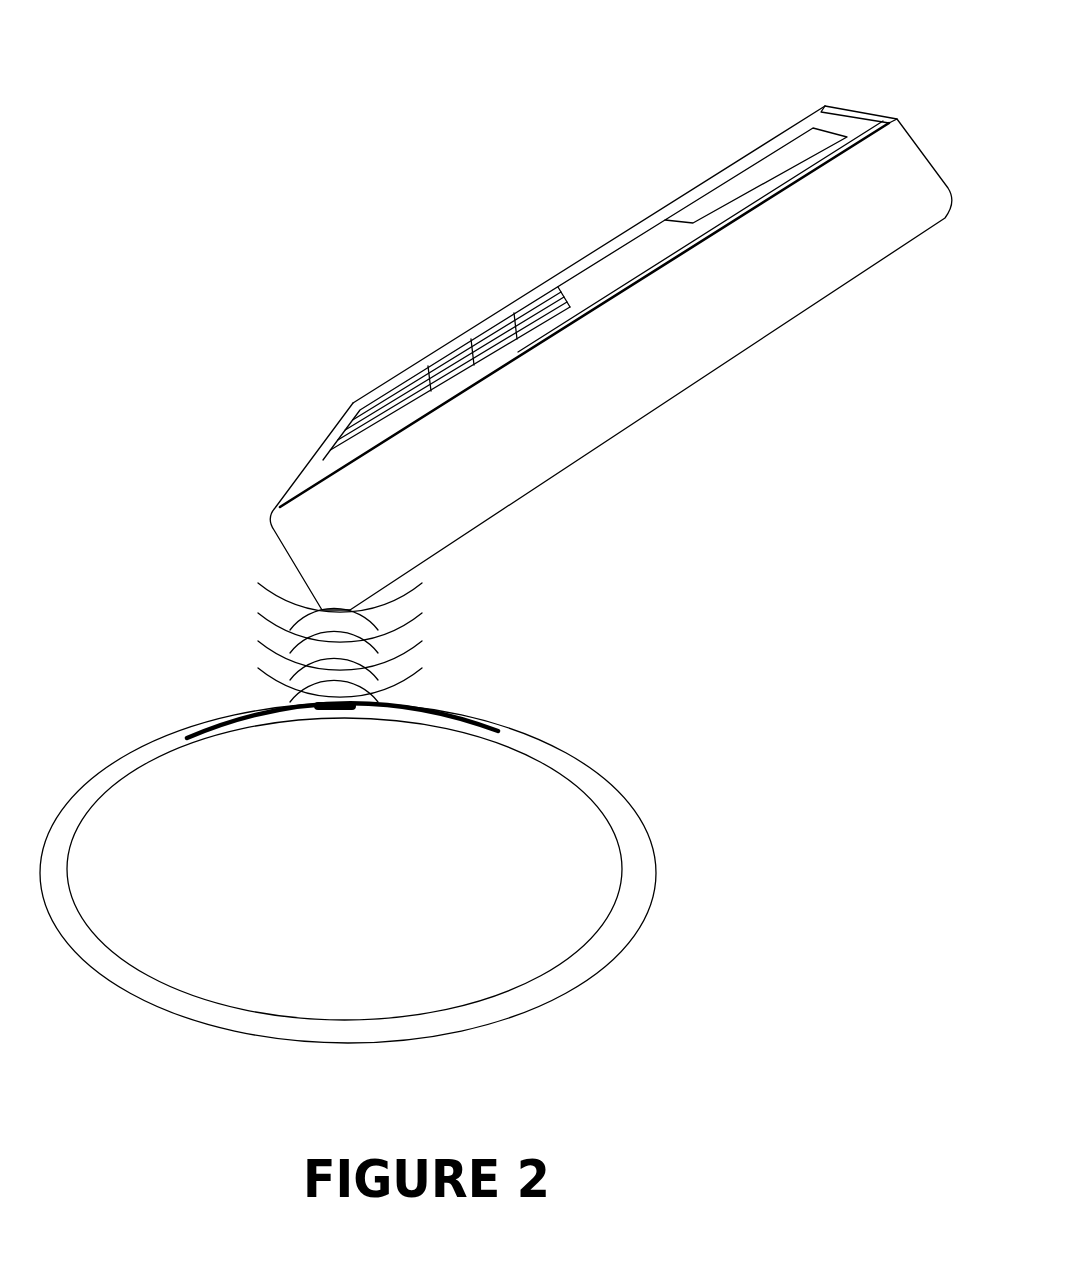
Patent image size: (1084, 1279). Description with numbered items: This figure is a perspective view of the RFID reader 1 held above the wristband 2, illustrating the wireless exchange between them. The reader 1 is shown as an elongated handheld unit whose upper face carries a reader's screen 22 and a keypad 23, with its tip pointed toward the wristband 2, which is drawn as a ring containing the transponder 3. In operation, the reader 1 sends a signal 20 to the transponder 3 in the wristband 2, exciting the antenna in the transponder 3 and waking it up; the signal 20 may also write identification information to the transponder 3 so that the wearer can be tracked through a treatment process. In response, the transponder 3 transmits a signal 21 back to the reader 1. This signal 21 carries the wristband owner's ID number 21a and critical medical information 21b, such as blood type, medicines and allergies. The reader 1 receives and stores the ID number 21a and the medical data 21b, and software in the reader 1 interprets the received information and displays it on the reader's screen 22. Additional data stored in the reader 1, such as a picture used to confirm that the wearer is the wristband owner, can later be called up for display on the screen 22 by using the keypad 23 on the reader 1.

The RFID reader 1 is at (611, 314).
The wristband 2 is at (539, 1009).
The transponder 3 is at (338, 729).
The signal 20 is at (430, 593).
The signal 21 is at (505, 655).
The ID number 21a is at (334, 642).
The critical medical information 21b is at (389, 649).
The reader's screen 22 is at (774, 158).
The keypad 23 is at (424, 352).